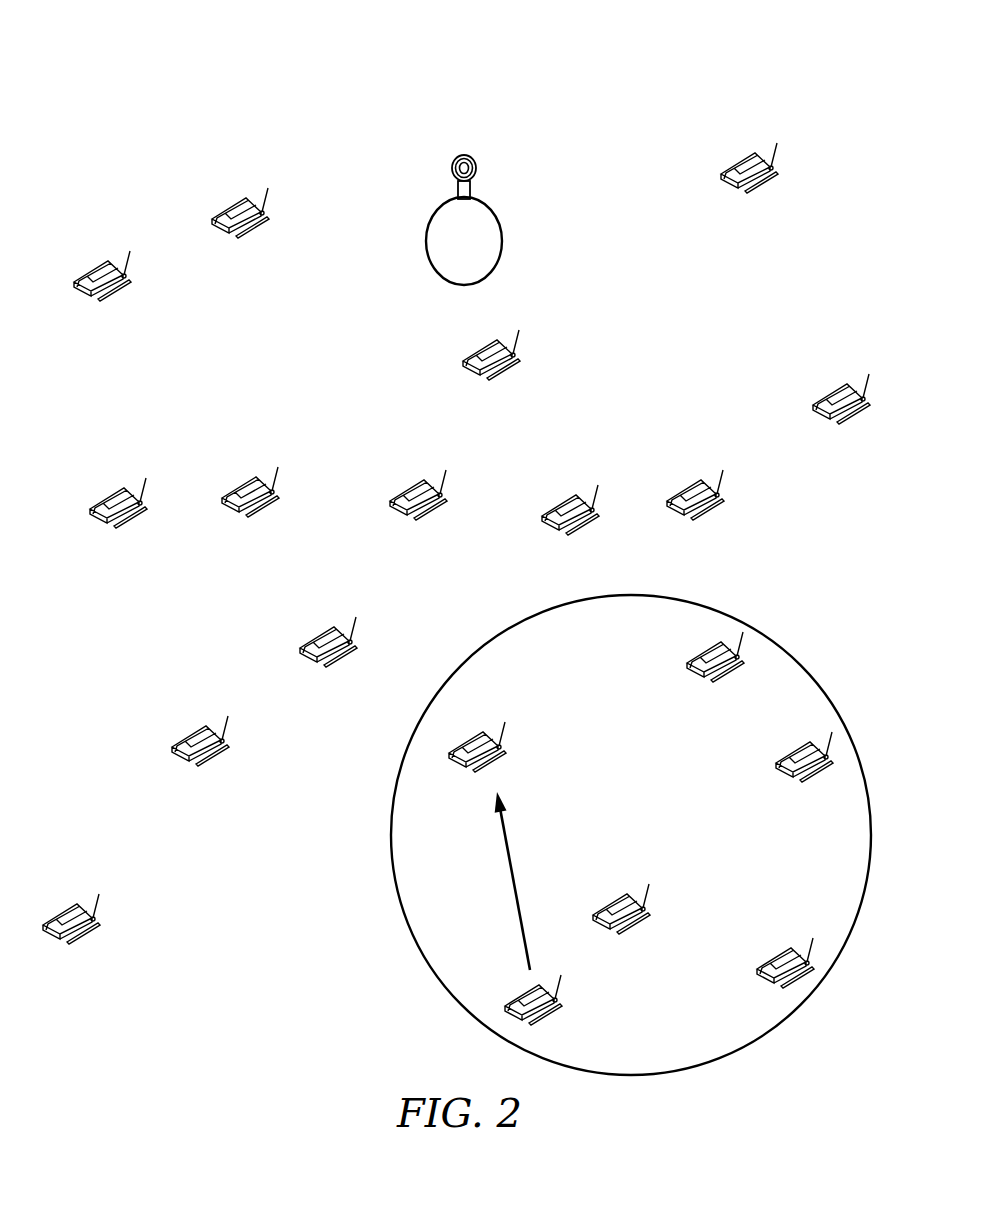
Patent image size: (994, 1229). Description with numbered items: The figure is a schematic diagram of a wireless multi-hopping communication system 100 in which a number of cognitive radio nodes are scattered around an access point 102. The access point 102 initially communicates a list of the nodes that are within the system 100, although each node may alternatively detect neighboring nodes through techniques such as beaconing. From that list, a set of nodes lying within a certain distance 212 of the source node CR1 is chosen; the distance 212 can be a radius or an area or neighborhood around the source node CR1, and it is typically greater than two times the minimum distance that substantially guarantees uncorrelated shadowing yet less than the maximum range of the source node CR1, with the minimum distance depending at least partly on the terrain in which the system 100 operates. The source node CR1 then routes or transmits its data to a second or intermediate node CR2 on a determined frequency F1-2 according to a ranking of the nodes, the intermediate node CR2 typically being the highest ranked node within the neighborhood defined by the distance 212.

The wireless multi-hopping communication system 100 is at (745, 52).
The access point 102 is at (502, 243).
The distance 212 is at (714, 607).
The source node CR1 is at (522, 993).
The second or intermediate node CR2 is at (463, 760).
The determined frequency F1-2 is at (523, 881).